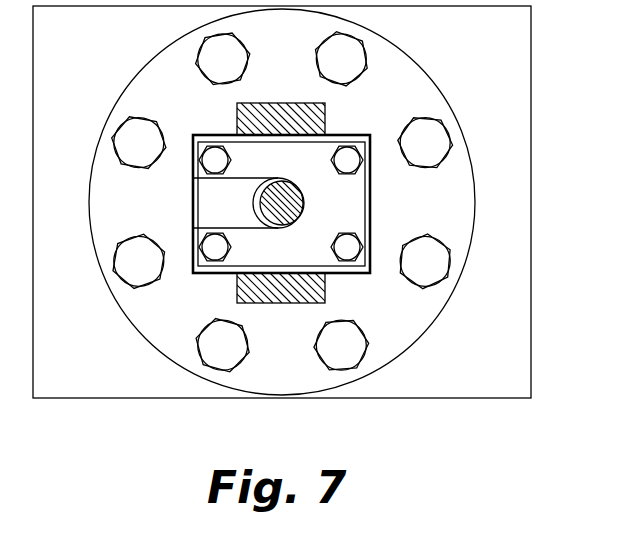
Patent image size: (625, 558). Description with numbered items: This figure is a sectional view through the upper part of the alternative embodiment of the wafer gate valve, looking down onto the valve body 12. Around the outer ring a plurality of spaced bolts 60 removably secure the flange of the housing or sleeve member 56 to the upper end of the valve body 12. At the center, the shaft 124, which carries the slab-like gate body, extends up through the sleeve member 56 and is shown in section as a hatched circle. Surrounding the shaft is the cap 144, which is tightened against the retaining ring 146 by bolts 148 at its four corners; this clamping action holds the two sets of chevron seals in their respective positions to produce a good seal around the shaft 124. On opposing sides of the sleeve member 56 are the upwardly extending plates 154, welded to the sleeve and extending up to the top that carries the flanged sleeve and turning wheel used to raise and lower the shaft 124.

The valve body 12 is at (531, 315).
The bolts 60 is at (419, 248).
The upwardly extending plates 154 is at (326, 124).
The sleeve member 56 is at (239, 215).
The cap 144 is at (355, 215).
The retaining ring 146 is at (255, 191).
The shaft 124 is at (257, 193).
The bolts 148 is at (222, 247).